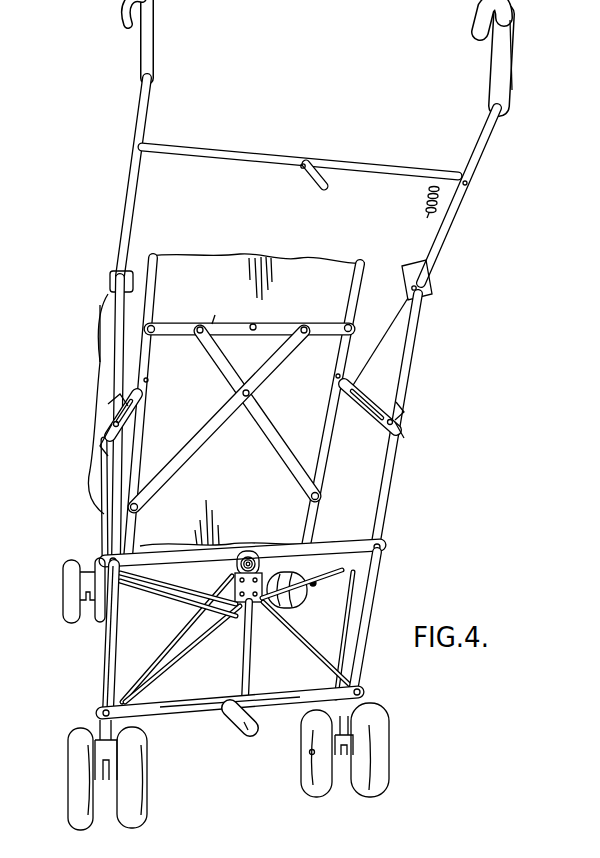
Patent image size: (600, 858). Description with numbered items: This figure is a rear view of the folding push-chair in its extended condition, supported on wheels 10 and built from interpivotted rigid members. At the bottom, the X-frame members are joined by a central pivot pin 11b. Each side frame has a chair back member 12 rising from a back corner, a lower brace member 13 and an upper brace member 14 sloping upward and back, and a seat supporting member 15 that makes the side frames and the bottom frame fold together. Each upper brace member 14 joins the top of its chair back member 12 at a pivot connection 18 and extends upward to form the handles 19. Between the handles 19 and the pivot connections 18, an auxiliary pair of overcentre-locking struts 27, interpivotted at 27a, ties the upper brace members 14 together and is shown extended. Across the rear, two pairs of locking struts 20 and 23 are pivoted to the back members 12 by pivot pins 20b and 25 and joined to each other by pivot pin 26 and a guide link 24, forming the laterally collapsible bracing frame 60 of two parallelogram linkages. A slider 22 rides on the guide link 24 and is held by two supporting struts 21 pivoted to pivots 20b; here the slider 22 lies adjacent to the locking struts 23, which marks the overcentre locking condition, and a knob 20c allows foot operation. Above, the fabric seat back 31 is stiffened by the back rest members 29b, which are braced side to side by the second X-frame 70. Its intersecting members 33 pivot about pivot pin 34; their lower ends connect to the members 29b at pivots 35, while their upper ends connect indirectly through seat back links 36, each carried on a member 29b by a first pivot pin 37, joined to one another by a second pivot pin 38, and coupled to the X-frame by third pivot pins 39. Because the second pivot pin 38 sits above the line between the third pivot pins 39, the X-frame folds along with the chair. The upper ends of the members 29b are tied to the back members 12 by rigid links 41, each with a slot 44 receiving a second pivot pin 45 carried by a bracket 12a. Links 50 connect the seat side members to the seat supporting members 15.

The wheels 10 is at (68, 615).
The central pivot pin 11b is at (193, 607).
The chair back member 12 is at (116, 362).
The bracket 12a is at (108, 413).
The lower brace member 13 is at (92, 525).
The upper brace member 14 is at (128, 199).
The seat supporting member 15 is at (342, 618).
The pivot connection 18 is at (112, 283).
The handles 19 is at (146, 26).
The locking struts 20 is at (193, 717).
The pivot pins 20b is at (100, 712).
The knob 20c is at (250, 731).
The supporting struts 21 is at (152, 672).
The slider 22 is at (254, 602).
The locking struts 23 is at (324, 550).
The guide link 24 is at (240, 657).
The pivot pins 25 is at (110, 559).
The pivot pin 26 is at (248, 556).
The overcentre-locking struts 27 is at (218, 157).
The interpivot 27a is at (300, 163).
The back rest members 29b is at (137, 462).
The fabric seat back 31 is at (298, 267).
The intersecting members 33 is at (280, 442).
The pivot pin 34 is at (249, 392).
The pivots 35 is at (140, 508).
The seat back links 36 is at (175, 322).
The first pivot pin 37 is at (155, 333).
The second pivot pin 38 is at (253, 323).
The third pivot pin 39 is at (297, 337).
The rigid links 41 is at (110, 412).
The slot 44 is at (124, 408).
The second pivot pin 45 is at (112, 421).
The links 50 is at (318, 582).
The laterally collapsible bracing frame 60 is at (208, 723).
The second X-frame 70 is at (215, 315).